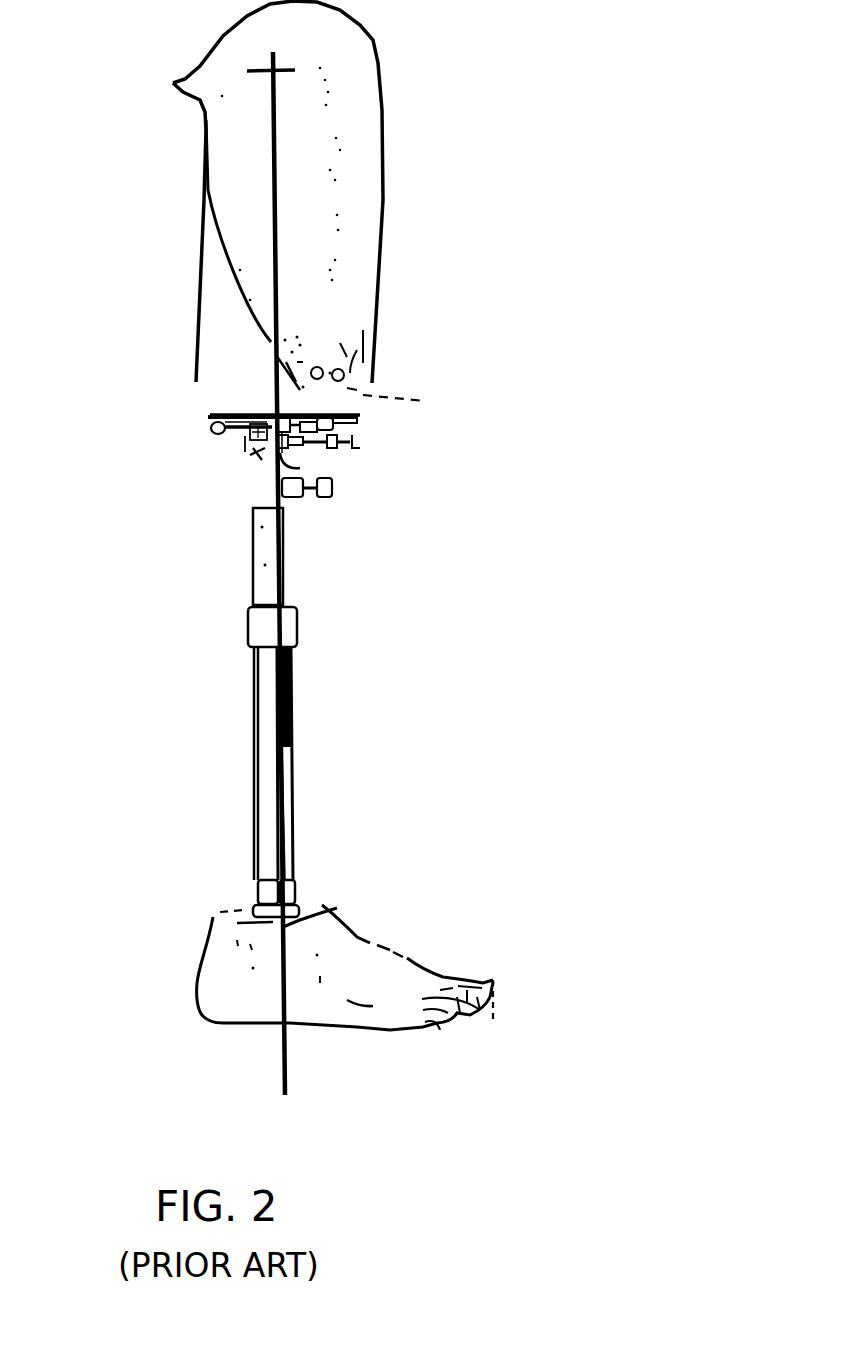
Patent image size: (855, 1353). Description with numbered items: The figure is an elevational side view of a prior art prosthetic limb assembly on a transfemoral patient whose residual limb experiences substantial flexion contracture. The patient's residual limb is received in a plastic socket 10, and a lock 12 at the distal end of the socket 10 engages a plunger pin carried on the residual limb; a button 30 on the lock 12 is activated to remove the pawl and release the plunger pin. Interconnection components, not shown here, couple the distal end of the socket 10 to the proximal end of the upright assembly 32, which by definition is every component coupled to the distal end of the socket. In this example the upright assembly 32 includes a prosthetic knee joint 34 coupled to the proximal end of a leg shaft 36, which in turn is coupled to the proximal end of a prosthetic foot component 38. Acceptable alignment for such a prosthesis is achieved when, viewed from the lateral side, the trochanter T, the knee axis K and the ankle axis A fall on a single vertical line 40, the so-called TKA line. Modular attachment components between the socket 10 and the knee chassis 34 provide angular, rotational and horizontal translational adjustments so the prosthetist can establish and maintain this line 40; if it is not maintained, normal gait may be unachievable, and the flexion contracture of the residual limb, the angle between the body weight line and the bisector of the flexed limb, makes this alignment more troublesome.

The socket 10 is at (363, 131).
The lock 12 is at (409, 404).
The button 30 is at (313, 364).
The upright assembly 32 is at (383, 621).
The prosthetic knee joint 34 is at (300, 460).
The leg shaft 36 is at (290, 680).
The prosthetic foot component 38 is at (398, 958).
The vertical alignment line 40 is at (272, 380).
The trochanter T is at (277, 62).
The knee axis K is at (258, 452).
The ankle axis A is at (337, 908).